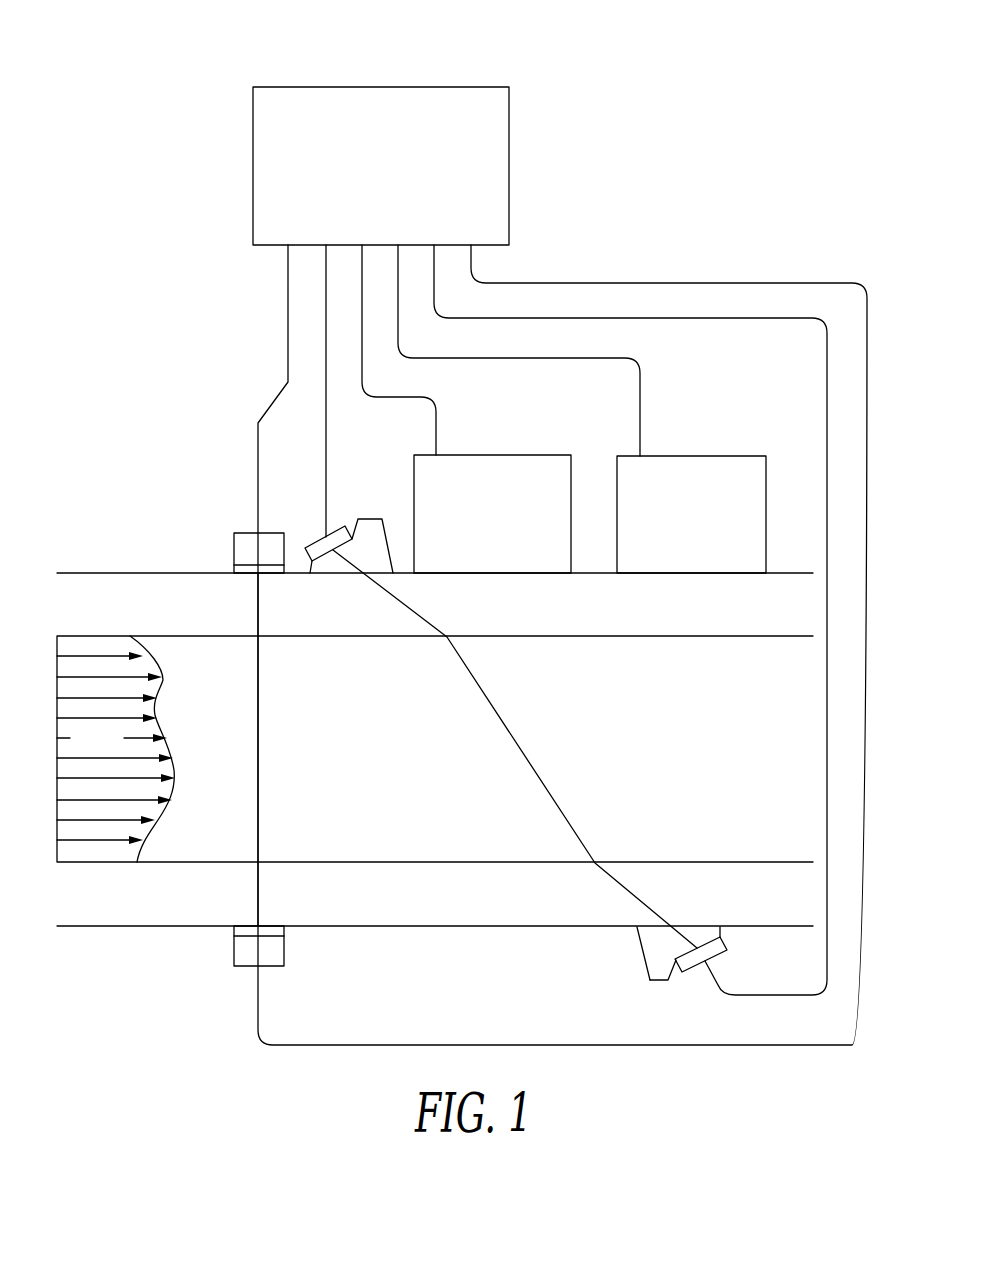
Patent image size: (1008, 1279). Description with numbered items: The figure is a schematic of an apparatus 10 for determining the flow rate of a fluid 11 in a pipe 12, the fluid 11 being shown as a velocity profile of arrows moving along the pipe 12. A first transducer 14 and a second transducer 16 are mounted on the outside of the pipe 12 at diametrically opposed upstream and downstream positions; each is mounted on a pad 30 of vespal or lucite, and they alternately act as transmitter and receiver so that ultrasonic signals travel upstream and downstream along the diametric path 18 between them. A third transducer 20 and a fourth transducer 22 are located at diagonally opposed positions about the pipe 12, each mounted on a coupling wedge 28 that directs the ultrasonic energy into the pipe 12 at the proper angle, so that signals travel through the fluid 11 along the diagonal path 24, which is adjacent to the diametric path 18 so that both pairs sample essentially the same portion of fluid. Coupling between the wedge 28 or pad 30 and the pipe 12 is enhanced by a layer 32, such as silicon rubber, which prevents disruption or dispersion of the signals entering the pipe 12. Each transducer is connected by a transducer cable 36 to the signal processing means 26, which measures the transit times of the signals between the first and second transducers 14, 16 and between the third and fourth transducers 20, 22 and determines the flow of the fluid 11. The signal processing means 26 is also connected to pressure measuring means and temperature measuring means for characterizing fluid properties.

The apparatus 10 is at (152, 237).
The fluid 11 is at (168, 728).
The pipe 12 is at (150, 585).
The first transducer 14 is at (235, 547).
The second transducer 16 is at (245, 966).
The diametric path 18 is at (262, 778).
The third transducer 20 is at (690, 972).
The fourth transducer 22 is at (313, 547).
The diagonal path 24 is at (543, 780).
The signal processing means 26 is at (362, 85).
The coupling wedge 28 is at (388, 543).
The pad 30 is at (288, 574).
The layer 32 is at (635, 930).
The transducer cable 36 is at (270, 405).